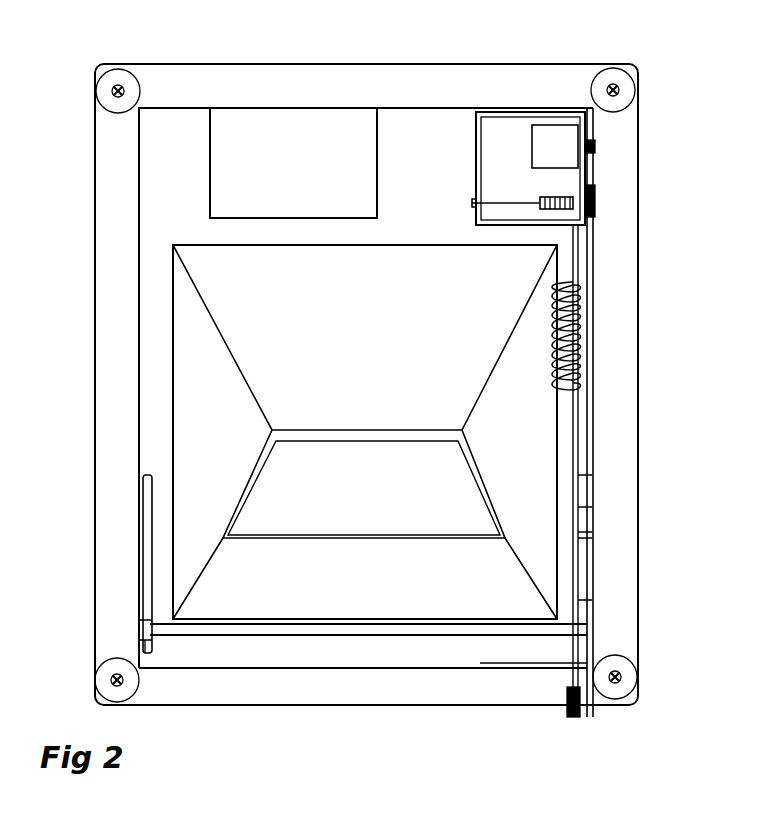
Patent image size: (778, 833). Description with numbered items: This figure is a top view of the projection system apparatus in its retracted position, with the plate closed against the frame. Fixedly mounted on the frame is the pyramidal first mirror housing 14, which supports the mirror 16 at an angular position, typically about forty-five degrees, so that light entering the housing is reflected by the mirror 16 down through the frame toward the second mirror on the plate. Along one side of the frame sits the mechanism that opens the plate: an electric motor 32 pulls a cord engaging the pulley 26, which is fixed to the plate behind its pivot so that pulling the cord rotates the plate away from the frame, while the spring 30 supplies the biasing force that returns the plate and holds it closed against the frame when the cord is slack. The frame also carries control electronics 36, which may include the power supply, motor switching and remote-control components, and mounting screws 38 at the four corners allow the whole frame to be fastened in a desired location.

The first mirror housing 14 is at (380, 366).
The mirror 16 is at (371, 513).
The pulley 26 is at (570, 717).
The spring 30 is at (572, 325).
The electric motor 32 is at (572, 138).
The control electronics 36 is at (297, 120).
The mounting screws 38 is at (615, 677).